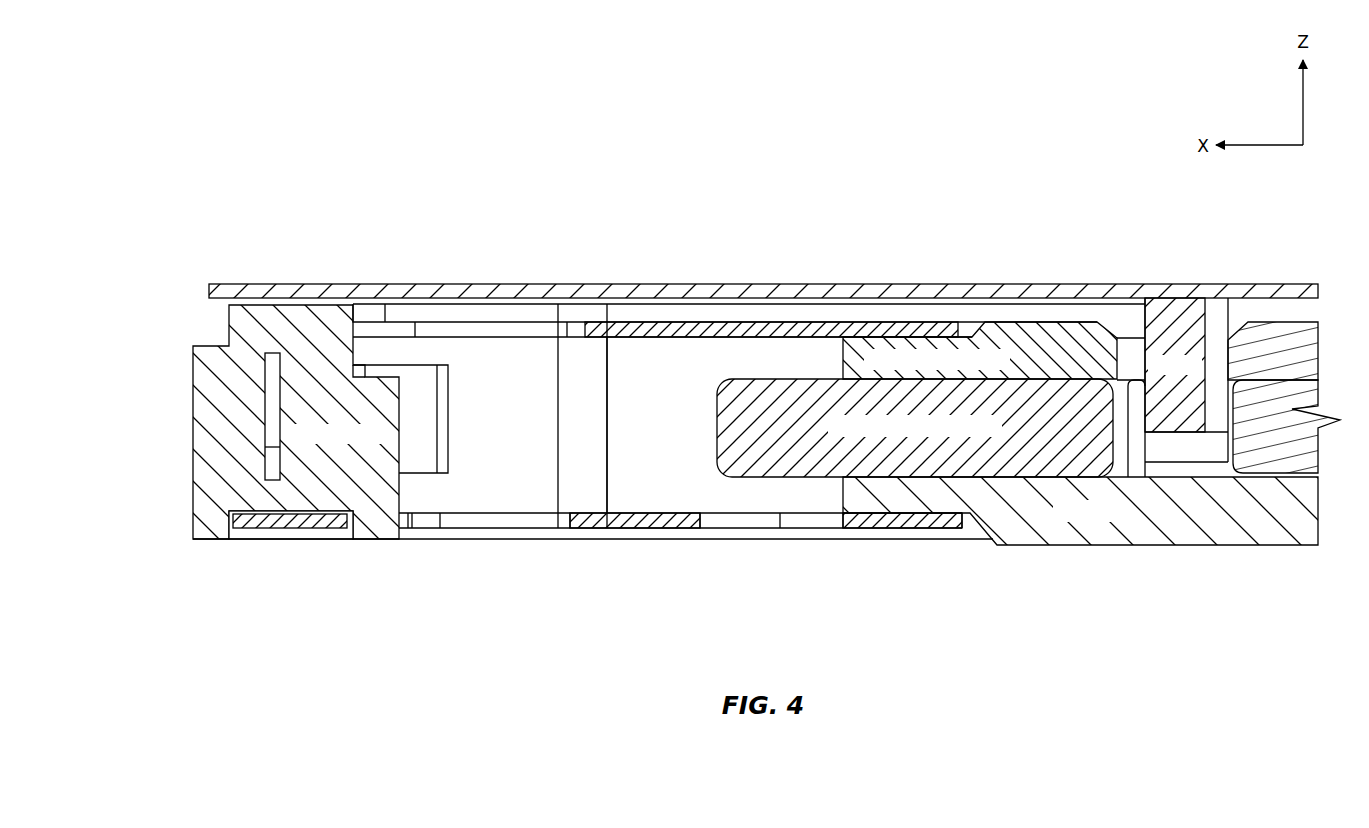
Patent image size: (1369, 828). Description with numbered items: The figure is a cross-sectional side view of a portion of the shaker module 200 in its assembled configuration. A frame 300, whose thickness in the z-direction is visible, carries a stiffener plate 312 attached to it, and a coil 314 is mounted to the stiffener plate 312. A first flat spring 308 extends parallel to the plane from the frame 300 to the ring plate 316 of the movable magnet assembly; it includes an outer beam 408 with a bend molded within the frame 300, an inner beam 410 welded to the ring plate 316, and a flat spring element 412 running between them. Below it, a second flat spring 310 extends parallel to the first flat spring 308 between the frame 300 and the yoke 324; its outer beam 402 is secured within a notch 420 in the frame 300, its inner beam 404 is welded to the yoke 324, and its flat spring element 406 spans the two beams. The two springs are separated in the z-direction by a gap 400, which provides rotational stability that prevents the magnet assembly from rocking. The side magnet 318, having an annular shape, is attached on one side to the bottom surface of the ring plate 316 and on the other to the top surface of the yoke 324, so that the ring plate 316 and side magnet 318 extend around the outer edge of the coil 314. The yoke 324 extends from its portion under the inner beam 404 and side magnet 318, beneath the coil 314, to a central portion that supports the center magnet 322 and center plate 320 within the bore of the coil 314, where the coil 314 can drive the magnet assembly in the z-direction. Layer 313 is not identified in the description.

The shaker module 200 is at (316, 145).
The frame 300 is at (216, 410).
The first flat spring 308 is at (585, 304).
The second flat spring 310 is at (521, 541).
The stiffener plate 312 is at (229, 291).
The upper spacer layer 313 is at (556, 286).
The coil 314 is at (1175, 315).
The ring plate 316 is at (1048, 345).
The side magnet 318 is at (796, 384).
The center plate 320 is at (1298, 345).
The center magnet 322 is at (1275, 466).
The yoke 324 is at (1234, 537).
The gap 400 is at (649, 490).
The outer beam 402 is at (297, 530).
The inner beam 404 is at (899, 530).
The flat spring element 406 is at (730, 530).
The outer beam 408 is at (272, 352).
The inner beam 410 is at (913, 321).
The flat spring element 412 is at (727, 321).
The notch 420 is at (267, 538).